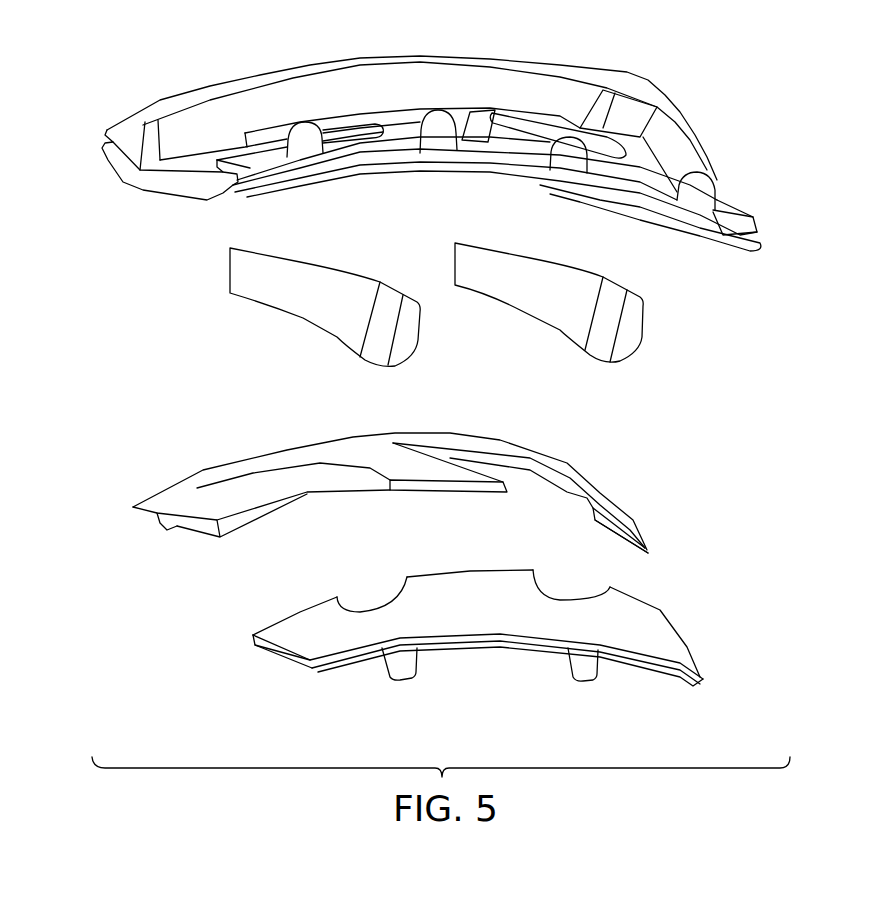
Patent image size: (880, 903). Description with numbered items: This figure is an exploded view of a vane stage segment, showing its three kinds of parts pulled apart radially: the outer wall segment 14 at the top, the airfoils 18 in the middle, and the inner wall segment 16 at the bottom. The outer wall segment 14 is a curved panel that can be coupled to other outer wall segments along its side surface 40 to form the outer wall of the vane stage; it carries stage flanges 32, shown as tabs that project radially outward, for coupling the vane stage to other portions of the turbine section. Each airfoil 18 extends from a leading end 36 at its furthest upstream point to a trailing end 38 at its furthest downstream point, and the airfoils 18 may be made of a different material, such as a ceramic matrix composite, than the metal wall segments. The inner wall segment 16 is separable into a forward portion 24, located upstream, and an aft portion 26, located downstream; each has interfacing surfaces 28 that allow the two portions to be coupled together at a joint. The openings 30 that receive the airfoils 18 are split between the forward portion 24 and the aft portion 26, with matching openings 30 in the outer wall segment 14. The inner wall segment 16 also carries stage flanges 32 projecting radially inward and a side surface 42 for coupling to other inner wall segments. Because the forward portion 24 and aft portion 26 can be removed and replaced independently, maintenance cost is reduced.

The outer wall segment 14 is at (133, 117).
The side surface 40 is at (123, 170).
The stage flange 32 is at (440, 110).
The airfoil 18 is at (452, 378).
The trailing end 38 is at (230, 272).
The leading end 36 is at (420, 323).
The inner wall segment 16 is at (135, 626).
The aft portion 26 is at (633, 518).
The interfacing surfaces 28 is at (252, 515).
The forward portion 24 is at (688, 645).
The openings 30 is at (337, 497).
The side surface 42 is at (192, 523).